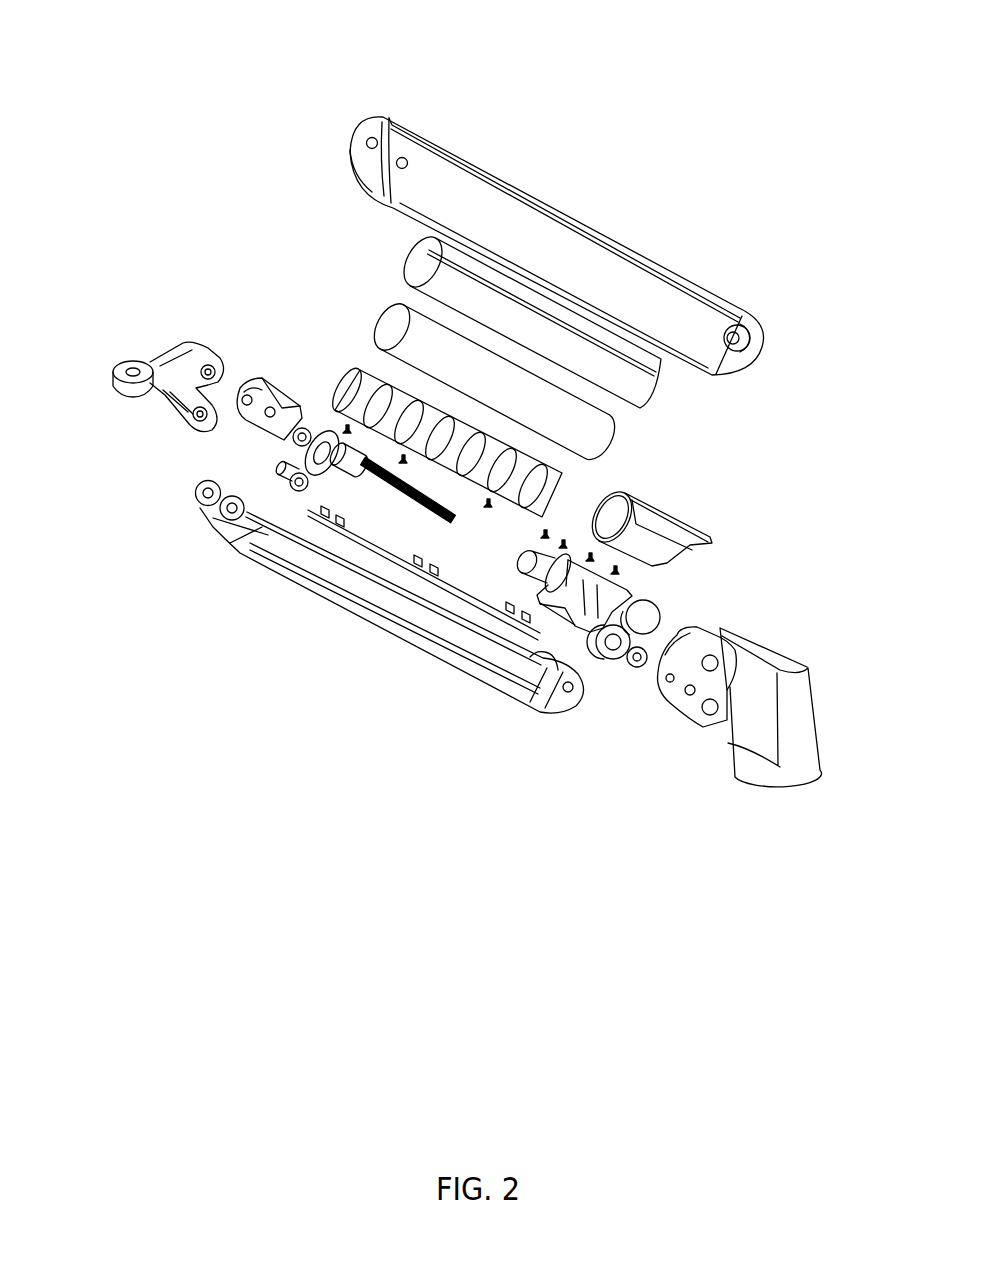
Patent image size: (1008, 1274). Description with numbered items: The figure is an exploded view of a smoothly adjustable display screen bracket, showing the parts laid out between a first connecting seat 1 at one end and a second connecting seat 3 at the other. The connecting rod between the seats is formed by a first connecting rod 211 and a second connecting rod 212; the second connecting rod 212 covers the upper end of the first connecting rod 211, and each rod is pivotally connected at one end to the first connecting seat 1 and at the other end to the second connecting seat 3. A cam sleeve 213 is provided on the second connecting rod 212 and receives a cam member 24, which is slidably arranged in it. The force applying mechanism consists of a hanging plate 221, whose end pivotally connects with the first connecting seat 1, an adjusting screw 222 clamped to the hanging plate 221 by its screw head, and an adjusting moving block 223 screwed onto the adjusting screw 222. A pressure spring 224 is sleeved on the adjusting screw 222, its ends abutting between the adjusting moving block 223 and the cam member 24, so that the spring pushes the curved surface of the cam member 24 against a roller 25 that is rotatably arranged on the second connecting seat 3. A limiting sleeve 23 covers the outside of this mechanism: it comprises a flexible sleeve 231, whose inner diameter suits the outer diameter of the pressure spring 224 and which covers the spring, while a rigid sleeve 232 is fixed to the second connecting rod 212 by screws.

The first connecting seat 1 is at (176, 386).
The second connecting seat 3 is at (753, 700).
The limiting sleeve 23 is at (175, 143).
The cam member 24 is at (578, 596).
The roller 25 is at (616, 648).
The first connecting rod 211 is at (363, 587).
The second connecting rod 212 is at (560, 250).
The cam sleeve 213 is at (645, 532).
The hanging plate 221 is at (280, 402).
The adjusting screw 222 is at (437, 514).
The adjusting moving block 223 is at (326, 470).
The pressure spring 224 is at (495, 507).
The flexible sleeve 231 is at (390, 328).
The rigid sleeve 232 is at (422, 268).